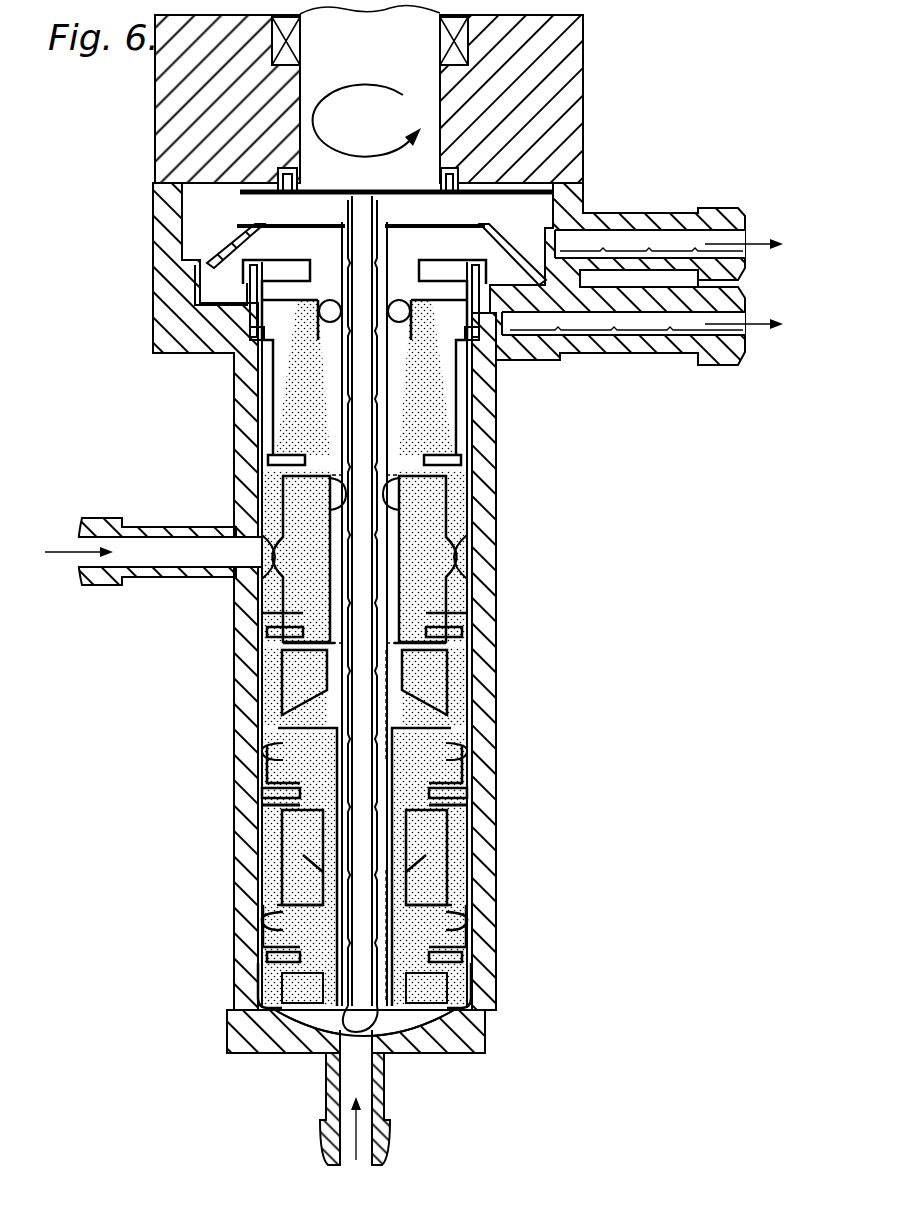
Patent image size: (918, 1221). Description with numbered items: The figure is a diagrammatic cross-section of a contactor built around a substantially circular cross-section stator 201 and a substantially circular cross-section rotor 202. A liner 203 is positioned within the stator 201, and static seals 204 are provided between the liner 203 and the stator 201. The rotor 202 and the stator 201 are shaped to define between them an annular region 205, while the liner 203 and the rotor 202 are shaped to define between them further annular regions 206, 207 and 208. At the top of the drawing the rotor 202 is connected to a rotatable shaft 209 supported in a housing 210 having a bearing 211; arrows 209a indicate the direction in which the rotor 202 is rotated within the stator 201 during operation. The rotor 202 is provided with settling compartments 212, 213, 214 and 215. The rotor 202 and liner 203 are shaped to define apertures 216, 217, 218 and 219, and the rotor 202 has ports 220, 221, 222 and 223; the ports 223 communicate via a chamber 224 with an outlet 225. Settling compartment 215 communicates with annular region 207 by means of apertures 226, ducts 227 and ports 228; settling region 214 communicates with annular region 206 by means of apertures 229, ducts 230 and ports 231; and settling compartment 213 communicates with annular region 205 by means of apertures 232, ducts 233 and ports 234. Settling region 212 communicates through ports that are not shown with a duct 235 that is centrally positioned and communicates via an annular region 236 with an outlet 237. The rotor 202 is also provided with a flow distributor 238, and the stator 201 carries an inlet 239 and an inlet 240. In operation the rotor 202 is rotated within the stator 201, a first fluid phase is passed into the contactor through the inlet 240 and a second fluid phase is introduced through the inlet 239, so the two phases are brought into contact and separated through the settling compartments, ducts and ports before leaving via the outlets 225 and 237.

The stator 201 is at (236, 677).
The rotor 202 is at (262, 753).
The liner 203 is at (287, 797).
The static seals 204 is at (262, 343).
The annular region 205 is at (447, 990).
The annular region 206 is at (453, 830).
The annular region 207 is at (452, 680).
The annular region 208 is at (455, 530).
The rotatable shaft 209 is at (400, 58).
The arrows 209a is at (370, 149).
The housing 210 is at (571, 146).
The bearing 211 is at (470, 53).
The settling compartment 212 is at (290, 838).
The settling compartment 213 is at (432, 662).
The settling compartment 214 is at (303, 512).
The settling compartment 215 is at (450, 398).
The aperture 216 is at (268, 957).
The aperture 217 is at (290, 803).
The aperture 218 is at (270, 632).
The aperture 219 is at (300, 460).
The port 220 is at (270, 910).
The port 221 is at (262, 737).
The port 222 is at (275, 578).
The ports 223 is at (250, 337).
The chamber 224 is at (245, 264).
The outlet 225 is at (722, 367).
The apertures 226 is at (332, 300).
The ducts 227 is at (300, 400).
The ports 228 is at (265, 718).
The apertures 229 is at (408, 490).
The ducts 230 is at (462, 600).
The ports 231 is at (440, 890).
The apertures 232 is at (290, 660).
The ducts 233 is at (307, 863).
The ports 234 is at (283, 987).
The duct 235 is at (336, 1012).
The annular region 236 is at (530, 200).
The outlet 237 is at (708, 213).
The flow distributor 238 is at (388, 1022).
The inlet 239 is at (104, 518).
The inlet 240 is at (389, 1145).